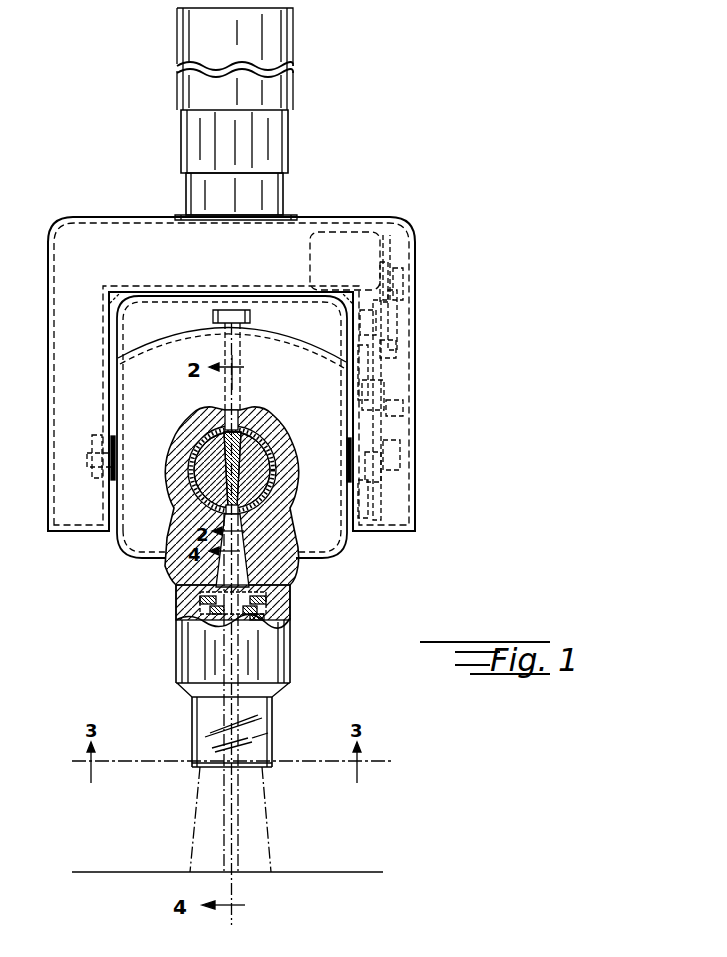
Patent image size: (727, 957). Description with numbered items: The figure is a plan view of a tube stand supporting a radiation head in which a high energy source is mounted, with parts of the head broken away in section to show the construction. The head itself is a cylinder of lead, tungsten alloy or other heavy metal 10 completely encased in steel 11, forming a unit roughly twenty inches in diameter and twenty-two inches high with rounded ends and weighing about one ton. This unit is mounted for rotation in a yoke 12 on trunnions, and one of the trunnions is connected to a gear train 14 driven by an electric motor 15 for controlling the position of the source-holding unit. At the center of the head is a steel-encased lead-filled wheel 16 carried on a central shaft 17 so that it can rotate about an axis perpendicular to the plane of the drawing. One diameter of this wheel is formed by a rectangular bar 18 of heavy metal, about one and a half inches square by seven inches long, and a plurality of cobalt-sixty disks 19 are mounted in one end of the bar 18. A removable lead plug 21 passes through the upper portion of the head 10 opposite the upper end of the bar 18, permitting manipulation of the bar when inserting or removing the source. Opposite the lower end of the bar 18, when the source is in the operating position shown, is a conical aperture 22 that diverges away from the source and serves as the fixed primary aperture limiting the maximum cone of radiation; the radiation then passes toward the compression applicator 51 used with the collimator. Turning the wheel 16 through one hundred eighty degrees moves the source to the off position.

The heavy metal cylinder 10 is at (262, 423).
The steel casing 11 is at (300, 334).
The yoke 12 is at (415, 321).
The gear train 14 is at (400, 374).
The electric motor 15 is at (310, 252).
The lead-filled wheel 16 is at (290, 450).
The central shaft 17 is at (172, 452).
The rectangular bar 18 is at (250, 480).
The disks 19 is at (240, 513).
The lead plug 21 is at (243, 371).
The conical aperture 22 is at (240, 570).
The compression applicator 51 is at (268, 836).